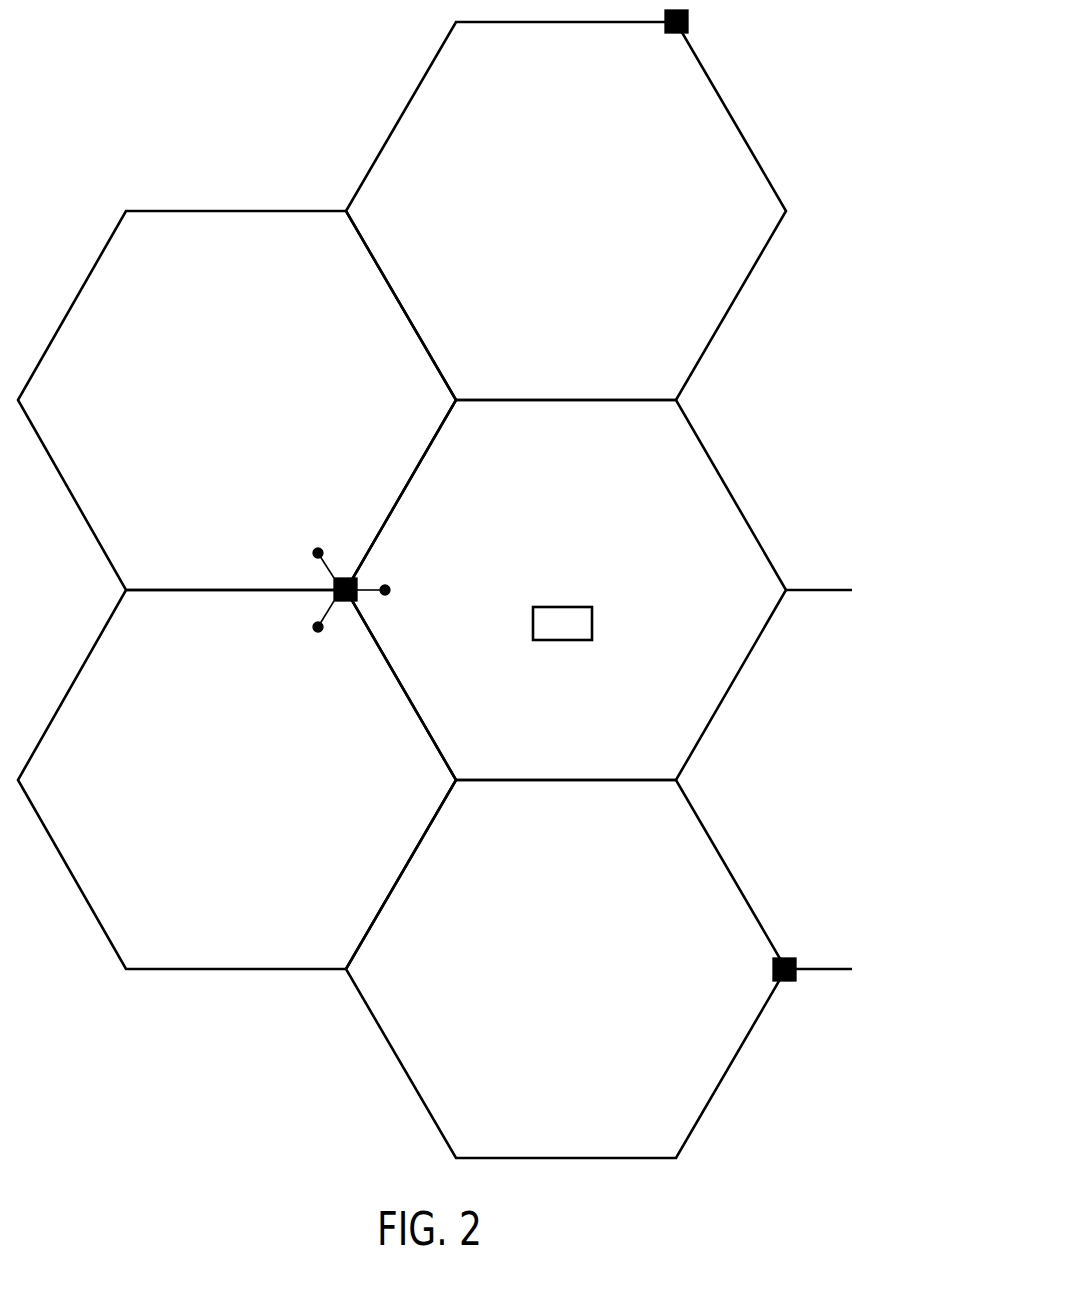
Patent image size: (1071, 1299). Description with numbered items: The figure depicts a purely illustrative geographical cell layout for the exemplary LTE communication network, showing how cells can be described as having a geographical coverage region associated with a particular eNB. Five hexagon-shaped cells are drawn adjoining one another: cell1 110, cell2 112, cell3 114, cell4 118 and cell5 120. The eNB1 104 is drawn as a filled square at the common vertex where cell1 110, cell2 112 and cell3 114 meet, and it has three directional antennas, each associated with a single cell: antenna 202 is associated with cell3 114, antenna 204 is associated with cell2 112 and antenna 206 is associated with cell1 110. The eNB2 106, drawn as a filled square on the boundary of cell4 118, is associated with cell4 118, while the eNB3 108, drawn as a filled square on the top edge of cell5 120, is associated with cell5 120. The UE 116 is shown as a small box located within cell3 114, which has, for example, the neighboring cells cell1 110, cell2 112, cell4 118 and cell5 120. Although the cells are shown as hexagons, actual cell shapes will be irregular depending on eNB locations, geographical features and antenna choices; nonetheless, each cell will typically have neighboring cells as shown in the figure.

The eNB1 104 is at (340, 578).
The eNB2 106 is at (783, 981).
The eNB3 108 is at (688, 22).
The cell1 110 is at (82, 289).
The cell2 112 is at (77, 890).
The cell3 114 is at (730, 492).
The UE 116 is at (593, 622).
The cell4 118 is at (727, 873).
The cell5 120 is at (733, 305).
The antenna 202 is at (370, 595).
The antenna 204 is at (327, 612).
The antenna 206 is at (330, 574).